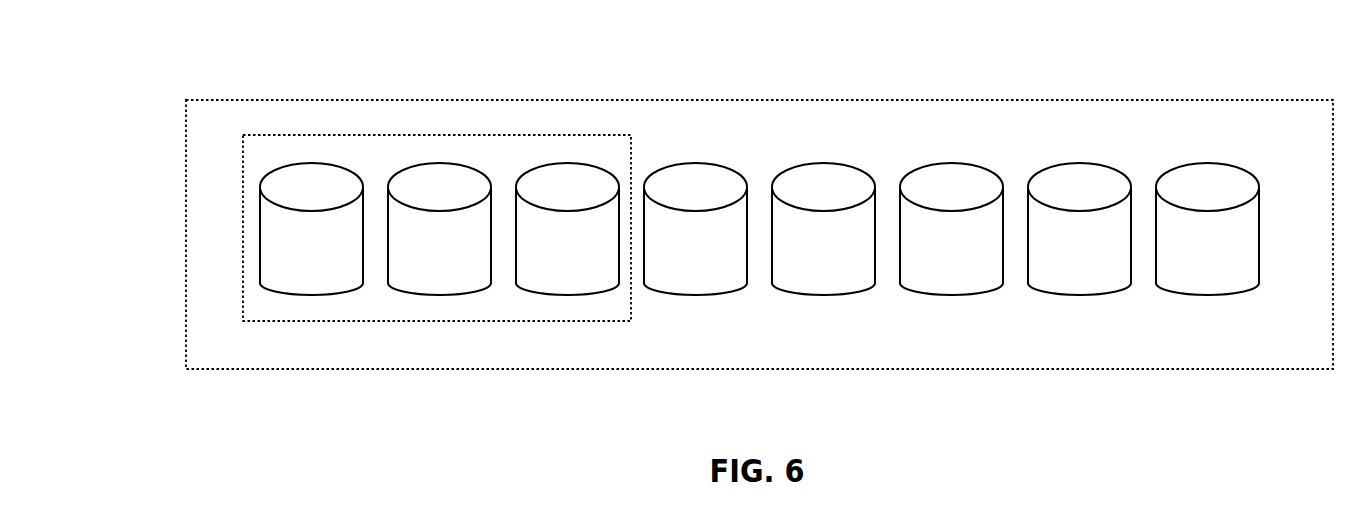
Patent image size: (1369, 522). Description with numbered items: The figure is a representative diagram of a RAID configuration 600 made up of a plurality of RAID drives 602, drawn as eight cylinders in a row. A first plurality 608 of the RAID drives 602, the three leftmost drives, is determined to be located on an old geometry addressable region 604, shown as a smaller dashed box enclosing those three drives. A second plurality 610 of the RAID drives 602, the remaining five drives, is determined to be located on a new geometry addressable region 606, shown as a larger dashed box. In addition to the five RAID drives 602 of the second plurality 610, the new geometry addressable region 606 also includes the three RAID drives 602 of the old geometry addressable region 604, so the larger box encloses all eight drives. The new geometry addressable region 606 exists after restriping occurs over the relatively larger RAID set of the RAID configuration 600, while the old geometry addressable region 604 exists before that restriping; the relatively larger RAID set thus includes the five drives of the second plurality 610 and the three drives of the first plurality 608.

The RAID configuration 600 is at (184, 55).
The RAID drives 602 is at (308, 296).
The old geometry addressable region 604 is at (438, 134).
The new geometry addressable region 606 is at (777, 100).
The first plurality of RAID drives 608 is at (352, 118).
The second plurality of RAID drives 610 is at (1009, 120).